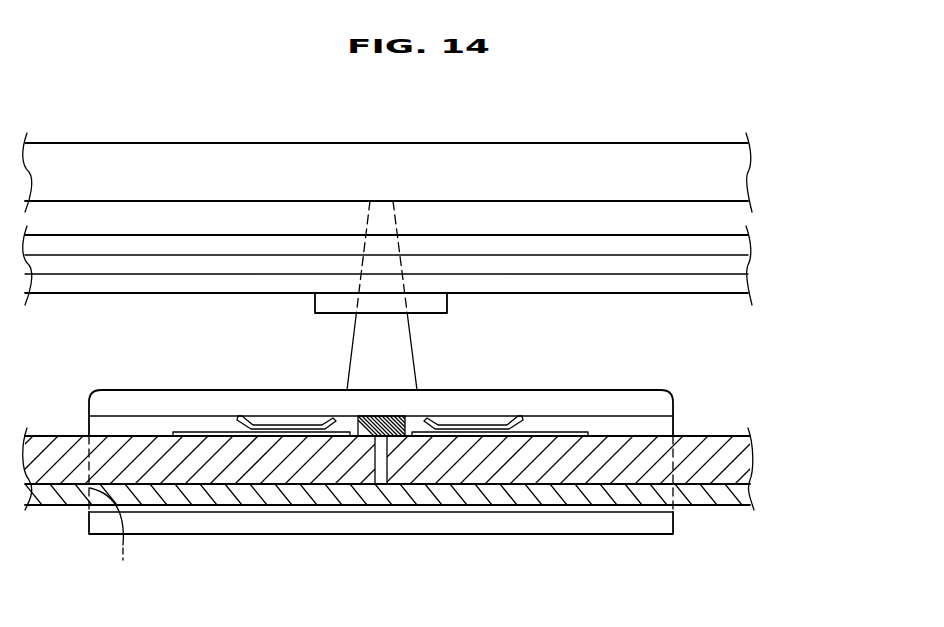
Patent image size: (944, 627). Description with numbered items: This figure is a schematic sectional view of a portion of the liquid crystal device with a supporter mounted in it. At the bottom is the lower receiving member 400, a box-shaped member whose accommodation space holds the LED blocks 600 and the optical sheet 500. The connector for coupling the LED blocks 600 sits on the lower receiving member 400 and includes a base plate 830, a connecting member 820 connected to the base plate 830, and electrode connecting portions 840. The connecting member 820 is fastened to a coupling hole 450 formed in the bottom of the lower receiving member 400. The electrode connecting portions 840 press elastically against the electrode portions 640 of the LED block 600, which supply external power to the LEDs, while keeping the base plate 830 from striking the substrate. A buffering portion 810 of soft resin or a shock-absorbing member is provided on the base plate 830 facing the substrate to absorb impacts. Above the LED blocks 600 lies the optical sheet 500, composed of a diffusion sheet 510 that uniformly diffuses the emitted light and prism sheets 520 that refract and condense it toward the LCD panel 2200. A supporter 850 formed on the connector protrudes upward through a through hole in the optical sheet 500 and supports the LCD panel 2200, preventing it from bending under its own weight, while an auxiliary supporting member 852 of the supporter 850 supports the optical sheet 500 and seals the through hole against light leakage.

The LCD panel 2200 is at (737, 168).
The optical sheet 500 is at (457, 265).
The prism sheet 520 is at (737, 265).
The diffusion sheet 510 is at (737, 283).
The auxiliary supporting member 852 is at (438, 305).
The supporter 850 is at (388, 337).
The base plate 830 is at (660, 401).
The connecting member 820 is at (519, 517).
The buffering portion 810 is at (433, 390).
The electrode connecting portion 840 is at (295, 426).
The electrode portion 640 is at (198, 433).
The LED block 600 is at (737, 462).
The lower receiving member 400 is at (737, 493).
The coupling hole 450 is at (117, 539).